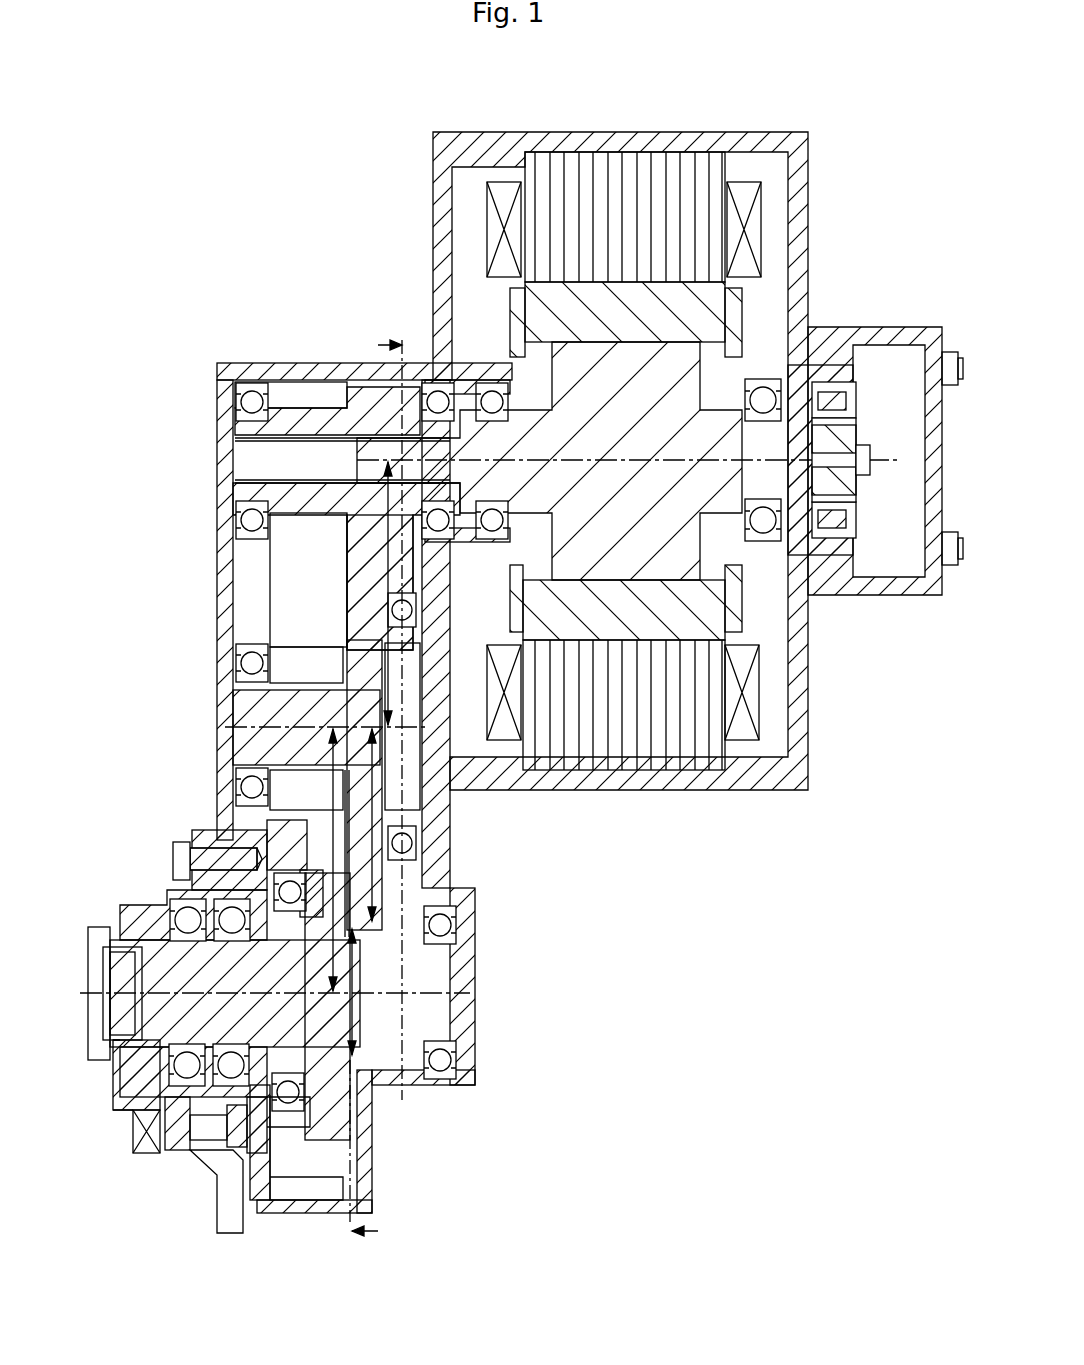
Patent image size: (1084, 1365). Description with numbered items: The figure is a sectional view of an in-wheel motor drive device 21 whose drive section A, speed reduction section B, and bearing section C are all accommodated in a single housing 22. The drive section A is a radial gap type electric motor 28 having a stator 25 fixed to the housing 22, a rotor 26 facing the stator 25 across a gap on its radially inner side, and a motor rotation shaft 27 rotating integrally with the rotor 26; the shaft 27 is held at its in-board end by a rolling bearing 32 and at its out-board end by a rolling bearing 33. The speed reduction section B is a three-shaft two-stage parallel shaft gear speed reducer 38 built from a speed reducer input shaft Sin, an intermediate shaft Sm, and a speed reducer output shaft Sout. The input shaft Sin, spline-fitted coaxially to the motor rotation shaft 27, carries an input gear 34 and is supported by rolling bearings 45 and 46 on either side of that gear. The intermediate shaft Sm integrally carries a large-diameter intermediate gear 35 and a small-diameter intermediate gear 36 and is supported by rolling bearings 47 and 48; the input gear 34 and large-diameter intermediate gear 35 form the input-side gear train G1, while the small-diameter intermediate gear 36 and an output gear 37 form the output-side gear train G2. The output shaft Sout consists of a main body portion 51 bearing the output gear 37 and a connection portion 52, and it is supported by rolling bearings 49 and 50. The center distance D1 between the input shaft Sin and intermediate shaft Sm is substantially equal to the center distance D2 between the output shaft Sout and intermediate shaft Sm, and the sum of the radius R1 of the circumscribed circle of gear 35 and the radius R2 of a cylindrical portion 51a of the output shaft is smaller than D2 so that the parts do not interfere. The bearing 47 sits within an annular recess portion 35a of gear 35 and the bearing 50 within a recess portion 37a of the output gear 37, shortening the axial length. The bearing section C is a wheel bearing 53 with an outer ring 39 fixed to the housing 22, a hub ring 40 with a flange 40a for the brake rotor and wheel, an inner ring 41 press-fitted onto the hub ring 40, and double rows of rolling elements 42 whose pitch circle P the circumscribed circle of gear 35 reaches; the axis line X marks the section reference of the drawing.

The in-wheel motor drive device 21 is at (280, 196).
The housing 22 is at (433, 152).
The stator 25 is at (615, 165).
The rotor 26 is at (625, 620).
The motor rotation shaft 27 is at (710, 430).
The electric motor 28 is at (752, 293).
The rolling bearing 32 is at (758, 548).
The rolling bearing 33 is at (490, 385).
The input gear 34 is at (275, 580).
The large-diameter intermediate gear 35 is at (360, 575).
The recess portion 35a is at (408, 895).
The small-diameter intermediate gear 36 is at (290, 778).
The output gear 37 is at (290, 822).
The recess portion 37a is at (173, 857).
The three-shaft two-stage parallel shaft gear speed reducer 38 is at (305, 382).
The outer ring 39 is at (172, 1150).
The hub ring 40 is at (125, 1052).
The flange 40a is at (133, 1143).
The inner ring 41 is at (202, 1150).
The rolling elements 42 is at (105, 968).
The rolling bearing 45 is at (446, 378).
The rolling bearing 46 is at (250, 385).
The rolling bearing 47 is at (384, 614).
The rolling bearing 48 is at (240, 648).
The rolling bearing 49 is at (470, 1090).
The rolling bearing 50 is at (282, 1165).
The main body portion 51 is at (380, 1050).
The cylindrical portion 51a is at (400, 1060).
The connection portion 52 is at (175, 1007).
The wheel bearing 53 is at (124, 906).
The drive section A is at (826, 166).
The speed reduction section B is at (215, 393).
The bearing section C is at (122, 1093).
The speed reducer input shaft Sin is at (295, 497).
The intermediate shaft Sm is at (260, 711).
The speed reducer output shaft Sout is at (423, 1010).
The gear train on the input side G1 is at (160, 566).
The gear train on the output side G2 is at (160, 768).
The center distance D1 is at (400, 655).
The center distance D2 is at (330, 945).
The radius of the circumscribed circle R1 is at (393, 805).
The radius of the outer peripheral surface R2 is at (430, 968).
The pitch circle P is at (352, 1015).
The axis X is at (374, 791).